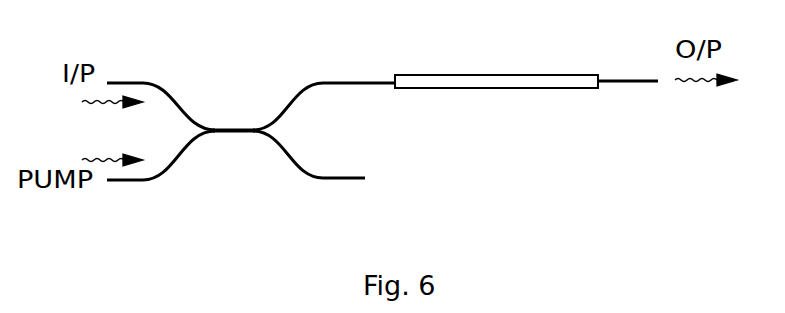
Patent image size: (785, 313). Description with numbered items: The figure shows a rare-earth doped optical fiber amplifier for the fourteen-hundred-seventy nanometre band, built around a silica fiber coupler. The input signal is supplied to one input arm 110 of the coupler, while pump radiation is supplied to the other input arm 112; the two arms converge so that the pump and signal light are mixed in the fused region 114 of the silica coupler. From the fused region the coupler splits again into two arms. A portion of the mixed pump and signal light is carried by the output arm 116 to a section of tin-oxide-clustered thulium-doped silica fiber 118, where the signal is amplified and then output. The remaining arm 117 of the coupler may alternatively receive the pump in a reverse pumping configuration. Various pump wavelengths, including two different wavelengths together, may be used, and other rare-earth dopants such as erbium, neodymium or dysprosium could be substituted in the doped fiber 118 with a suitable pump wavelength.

The input arm 110 is at (128, 82).
The input arm 112 is at (143, 182).
The fused region 114 is at (232, 110).
The output arm 116 is at (327, 82).
The arm 117 is at (343, 181).
The SnO2-clustered Tm3+-doped silica fiber 118 is at (500, 75).